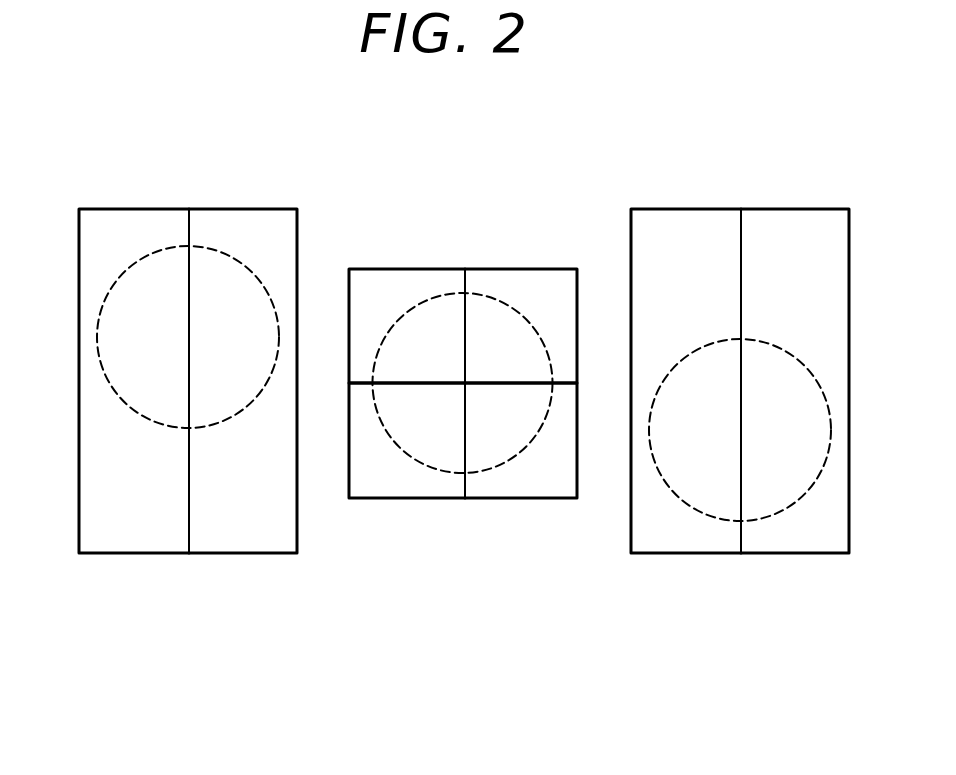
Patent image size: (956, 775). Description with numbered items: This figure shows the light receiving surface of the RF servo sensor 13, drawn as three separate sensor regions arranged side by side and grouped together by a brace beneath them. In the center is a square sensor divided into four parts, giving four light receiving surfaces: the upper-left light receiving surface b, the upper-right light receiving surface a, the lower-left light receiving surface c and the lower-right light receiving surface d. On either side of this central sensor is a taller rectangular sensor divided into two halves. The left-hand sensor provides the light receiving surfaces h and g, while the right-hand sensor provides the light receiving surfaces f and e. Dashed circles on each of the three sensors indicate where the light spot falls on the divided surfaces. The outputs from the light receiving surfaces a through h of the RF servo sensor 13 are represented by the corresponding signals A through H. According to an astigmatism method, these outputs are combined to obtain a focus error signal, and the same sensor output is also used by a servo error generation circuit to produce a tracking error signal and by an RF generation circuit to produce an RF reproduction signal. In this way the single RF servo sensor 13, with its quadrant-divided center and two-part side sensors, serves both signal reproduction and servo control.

The RF servo sensor 13 is at (463, 411).
The light receiving surface a is at (531, 268).
The light receiving surface b is at (399, 268).
The light receiving surface c is at (393, 500).
The light receiving surface d is at (528, 500).
The light receiving surface e is at (803, 208).
The light receiving surface f is at (687, 208).
The light receiving surface g is at (251, 208).
The light receiving surface h is at (126, 208).